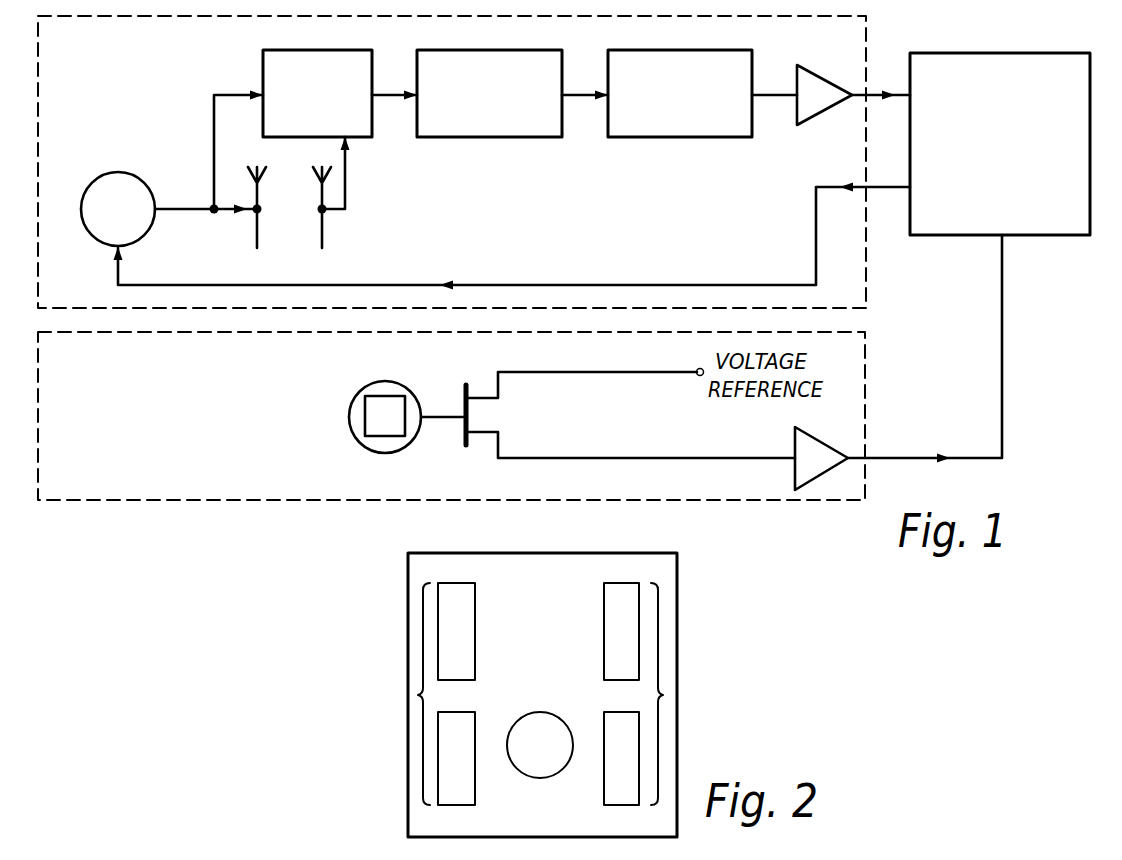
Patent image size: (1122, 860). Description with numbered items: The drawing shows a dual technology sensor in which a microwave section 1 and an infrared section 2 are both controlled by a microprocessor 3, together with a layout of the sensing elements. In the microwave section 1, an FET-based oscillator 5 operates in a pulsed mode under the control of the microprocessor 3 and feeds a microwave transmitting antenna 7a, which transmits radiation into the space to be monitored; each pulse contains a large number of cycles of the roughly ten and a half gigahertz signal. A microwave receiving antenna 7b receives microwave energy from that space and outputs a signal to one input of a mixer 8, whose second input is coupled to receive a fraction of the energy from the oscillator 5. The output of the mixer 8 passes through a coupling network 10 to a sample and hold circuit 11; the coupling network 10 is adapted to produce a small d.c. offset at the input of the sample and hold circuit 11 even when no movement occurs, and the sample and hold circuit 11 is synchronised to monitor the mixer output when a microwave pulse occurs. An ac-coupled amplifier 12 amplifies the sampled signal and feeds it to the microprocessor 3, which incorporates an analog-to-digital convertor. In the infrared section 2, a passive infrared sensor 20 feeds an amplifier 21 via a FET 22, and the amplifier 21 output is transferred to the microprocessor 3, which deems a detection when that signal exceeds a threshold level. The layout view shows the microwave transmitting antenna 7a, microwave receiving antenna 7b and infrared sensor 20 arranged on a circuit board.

In FIG. 1, the microwave section 1 is at (867, 47).
In FIG. 1, the infrared section 2 is at (212, 499).
In FIG. 1, the microprocessor 3 is at (953, 236).
In FIG. 1, the FET-based oscillator 5 is at (118, 209).
In FIG. 1, the microwave transmitting antenna 7a is at (253, 222).
In FIG. 2, the microwave transmitting antenna 7a is at (418, 695).
In FIG. 1, the microwave receiving antenna 7b is at (328, 207).
In FIG. 2, the microwave receiving antenna 7b is at (663, 695).
In FIG. 1, the mixer 8 is at (317, 93).
In FIG. 1, the coupling network 10 is at (535, 138).
In FIG. 1, the sample and hold circuit 11 is at (722, 138).
In FIG. 1, the ac-coupled amplifier 12 is at (824, 95).
In FIG. 1, the passive infrared sensor 20 is at (350, 420).
In FIG. 2, the passive infrared sensor 20 is at (540, 770).
In FIG. 1, the amplifier 21 is at (821, 458).
In FIG. 1, the FET 22 is at (463, 428).